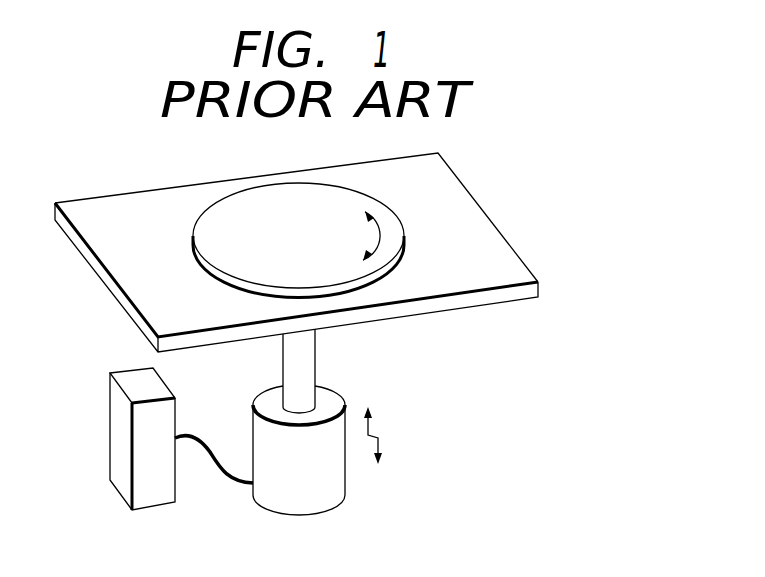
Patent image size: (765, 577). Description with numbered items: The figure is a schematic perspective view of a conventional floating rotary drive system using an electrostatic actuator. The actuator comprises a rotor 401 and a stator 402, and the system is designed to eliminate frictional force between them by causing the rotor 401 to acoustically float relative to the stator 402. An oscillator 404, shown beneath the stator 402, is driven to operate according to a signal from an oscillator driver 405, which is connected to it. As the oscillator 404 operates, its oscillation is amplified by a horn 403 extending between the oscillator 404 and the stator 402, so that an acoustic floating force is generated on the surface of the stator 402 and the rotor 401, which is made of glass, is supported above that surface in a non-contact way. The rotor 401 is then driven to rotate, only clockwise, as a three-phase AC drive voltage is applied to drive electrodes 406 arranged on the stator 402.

The rotor 401 is at (238, 212).
The stator 402 is at (468, 215).
The horn 403 is at (305, 367).
The oscillator 404 is at (338, 483).
The oscillator driver 405 is at (118, 450).
The drive electrodes 406 is at (400, 258).